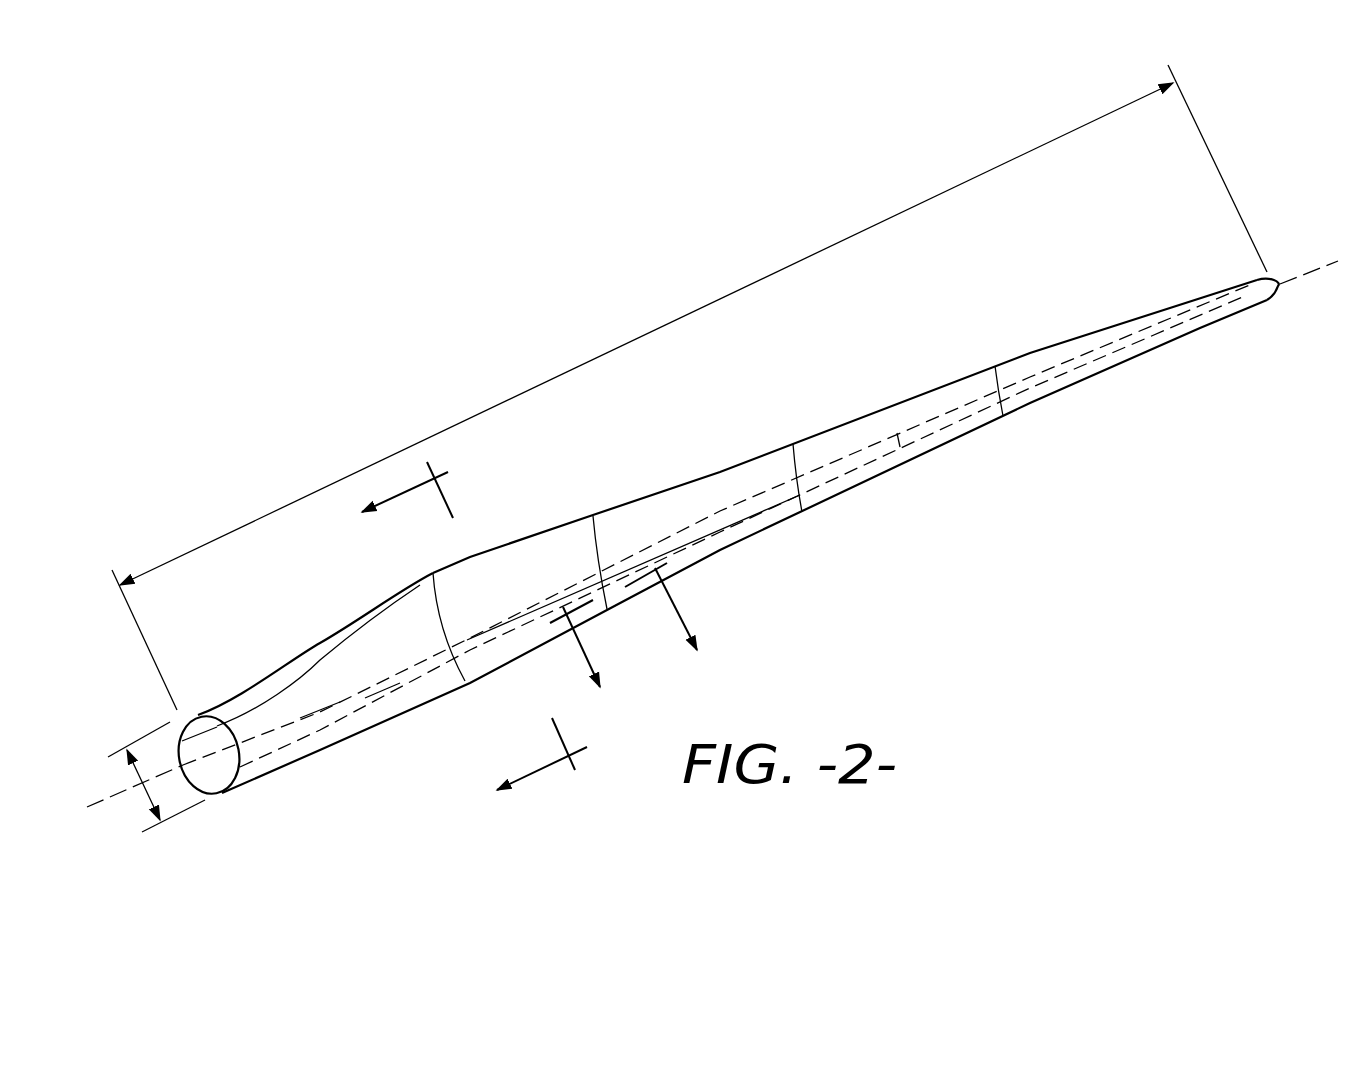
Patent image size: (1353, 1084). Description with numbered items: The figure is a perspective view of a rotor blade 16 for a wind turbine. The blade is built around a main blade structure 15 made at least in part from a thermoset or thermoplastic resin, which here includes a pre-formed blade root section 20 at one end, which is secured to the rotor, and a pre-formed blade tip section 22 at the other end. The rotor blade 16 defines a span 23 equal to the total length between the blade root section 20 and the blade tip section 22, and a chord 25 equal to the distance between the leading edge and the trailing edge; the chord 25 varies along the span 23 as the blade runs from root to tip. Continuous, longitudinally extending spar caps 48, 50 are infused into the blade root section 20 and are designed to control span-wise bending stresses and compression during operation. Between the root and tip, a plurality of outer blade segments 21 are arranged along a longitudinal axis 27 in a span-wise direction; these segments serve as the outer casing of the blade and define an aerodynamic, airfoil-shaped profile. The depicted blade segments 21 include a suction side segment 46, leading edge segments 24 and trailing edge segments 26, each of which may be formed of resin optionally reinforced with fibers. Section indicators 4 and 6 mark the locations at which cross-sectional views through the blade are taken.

The rotor blade 16 is at (380, 350).
The blade root section 20 is at (218, 700).
The blade tip section 22 is at (1148, 352).
The span 23 is at (663, 328).
The leading edge segment 24 is at (507, 658).
The trailing edge segment 26 is at (520, 555).
The outer blade segment 21 is at (457, 558).
The suction side segment 46 is at (953, 397).
The spar cap 48 is at (190, 750).
The chord 25 is at (168, 772).
The longitudinal axis 27 is at (180, 817).
The spar cap 50 is at (322, 718).
The main blade structure 15 is at (380, 697).
The section line 4- 4 is at (457, 639).
The section line 6- 6 is at (631, 643).